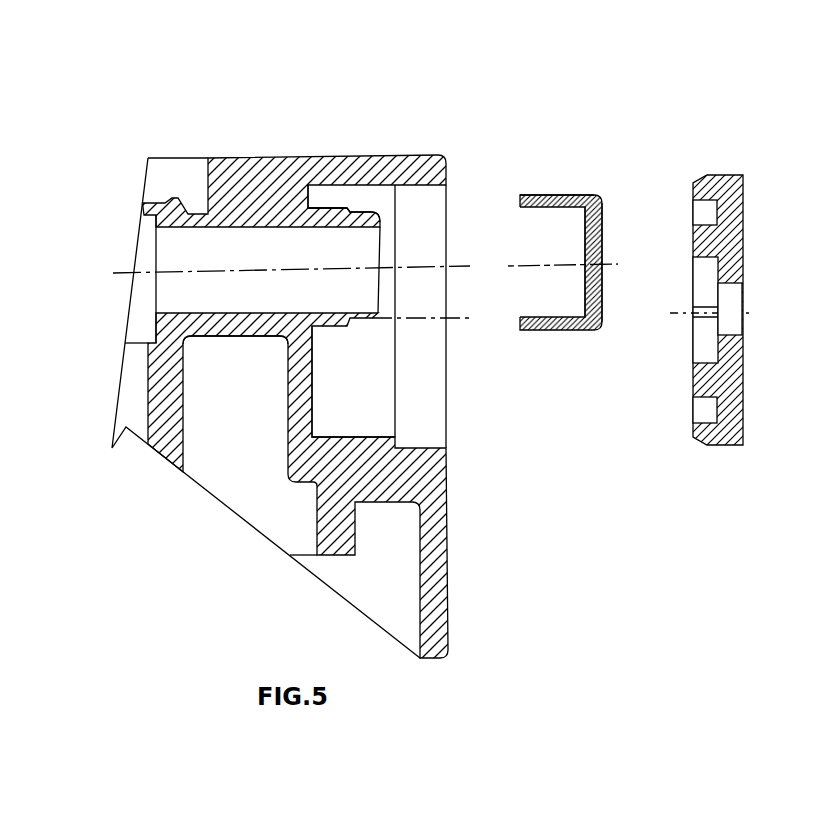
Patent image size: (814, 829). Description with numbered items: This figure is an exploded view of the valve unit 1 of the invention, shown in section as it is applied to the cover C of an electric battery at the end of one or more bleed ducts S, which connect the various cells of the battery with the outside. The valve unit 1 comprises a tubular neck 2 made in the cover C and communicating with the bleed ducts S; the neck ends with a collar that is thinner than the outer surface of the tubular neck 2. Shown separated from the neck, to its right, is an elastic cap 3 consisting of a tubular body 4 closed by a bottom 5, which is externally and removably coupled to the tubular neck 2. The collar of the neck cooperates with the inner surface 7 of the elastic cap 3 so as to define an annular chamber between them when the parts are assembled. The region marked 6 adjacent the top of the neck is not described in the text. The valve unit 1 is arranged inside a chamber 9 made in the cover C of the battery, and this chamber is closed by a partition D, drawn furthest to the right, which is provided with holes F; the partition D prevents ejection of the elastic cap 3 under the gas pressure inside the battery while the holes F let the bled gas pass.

The valve unit 1 is at (325, 350).
The tubular neck 2 is at (330, 222).
The elastic cap 3 is at (613, 170).
The tubular body 4 is at (548, 195).
The bottom 5 is at (598, 280).
The recess 6 is at (382, 197).
The inner surface 7 is at (550, 233).
The chamber 9 is at (357, 413).
The bleed ducts S is at (207, 293).
The cover C is at (440, 587).
The partition D is at (742, 215).
The holes F is at (732, 303).